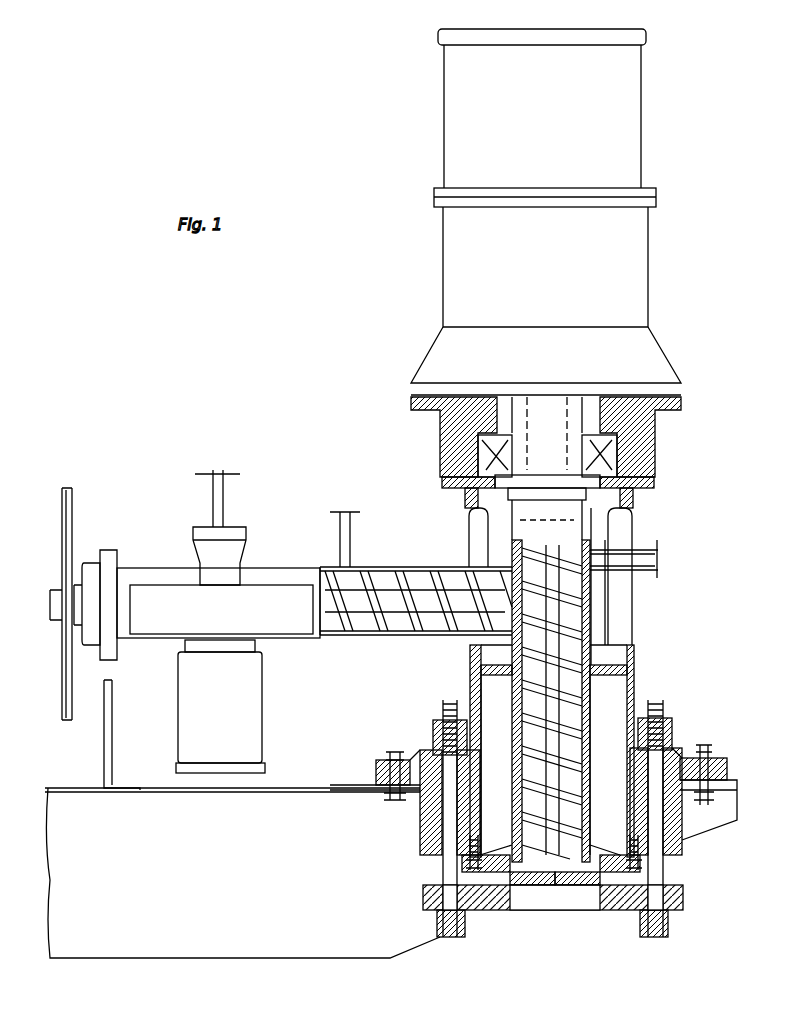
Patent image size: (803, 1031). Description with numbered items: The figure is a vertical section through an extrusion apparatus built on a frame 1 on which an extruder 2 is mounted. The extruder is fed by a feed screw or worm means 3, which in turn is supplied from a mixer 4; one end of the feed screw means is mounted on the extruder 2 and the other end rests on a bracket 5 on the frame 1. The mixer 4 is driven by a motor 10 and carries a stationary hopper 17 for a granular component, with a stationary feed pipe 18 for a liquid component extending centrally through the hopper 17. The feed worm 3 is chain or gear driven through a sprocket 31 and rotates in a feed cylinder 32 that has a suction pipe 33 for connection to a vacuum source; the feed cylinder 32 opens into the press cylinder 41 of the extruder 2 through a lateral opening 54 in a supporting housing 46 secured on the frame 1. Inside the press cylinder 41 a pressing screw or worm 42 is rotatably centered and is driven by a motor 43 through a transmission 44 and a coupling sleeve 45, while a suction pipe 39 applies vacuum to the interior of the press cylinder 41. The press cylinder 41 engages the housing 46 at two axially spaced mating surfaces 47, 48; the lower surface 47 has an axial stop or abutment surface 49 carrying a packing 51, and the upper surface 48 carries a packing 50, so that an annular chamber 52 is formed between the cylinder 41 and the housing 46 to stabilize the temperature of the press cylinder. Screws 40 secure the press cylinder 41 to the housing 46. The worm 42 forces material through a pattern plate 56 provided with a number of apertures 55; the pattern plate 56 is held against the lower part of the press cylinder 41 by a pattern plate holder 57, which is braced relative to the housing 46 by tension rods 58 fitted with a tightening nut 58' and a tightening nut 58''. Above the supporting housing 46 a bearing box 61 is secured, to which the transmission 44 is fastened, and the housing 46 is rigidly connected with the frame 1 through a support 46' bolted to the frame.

The frame 1 is at (270, 930).
The extruder 2 is at (682, 708).
The feed screw or worm means 3 is at (380, 590).
The mixer 4 is at (266, 569).
The bracket 5 is at (110, 725).
The motor 10 is at (220, 706).
The hopper 17 is at (232, 532).
The feed pipe 18 is at (222, 488).
The sprocket 31 is at (66, 490).
The feed cylinder 32 is at (340, 638).
The suction pipe 33 is at (338, 528).
The suction pipe 39 is at (660, 570).
The screws 40 is at (473, 915).
The press cylinder 41 is at (590, 612).
The pressing screw or worm 42 is at (580, 732).
The motor 43 is at (622, 130).
The transmission 44 is at (628, 297).
The coupling sleeve 45 is at (592, 482).
The supporting housing 46 is at (587, 495).
The support 46' is at (375, 768).
The lower cylindrical mating surface 47 is at (615, 845).
The upper cylindrical mating surface 48 is at (625, 672).
The axial stop or abutment surface 49 is at (492, 845).
The packing 50 is at (480, 680).
The packing 51 is at (488, 825).
The annular chamber 52 is at (485, 700).
The lateral opening 54 is at (470, 530).
The apertures 55 is at (538, 893).
The pattern plate 56 is at (582, 893).
The pattern plate holder 57 is at (670, 913).
The tension rods 58 is at (545, 818).
The tightening nut 58' is at (552, 949).
The tightening nut 58'' is at (528, 729).
The bearing box 61 is at (650, 457).